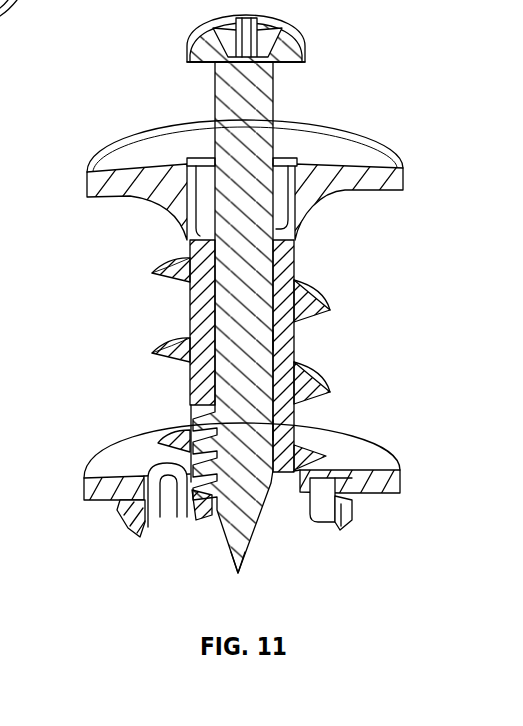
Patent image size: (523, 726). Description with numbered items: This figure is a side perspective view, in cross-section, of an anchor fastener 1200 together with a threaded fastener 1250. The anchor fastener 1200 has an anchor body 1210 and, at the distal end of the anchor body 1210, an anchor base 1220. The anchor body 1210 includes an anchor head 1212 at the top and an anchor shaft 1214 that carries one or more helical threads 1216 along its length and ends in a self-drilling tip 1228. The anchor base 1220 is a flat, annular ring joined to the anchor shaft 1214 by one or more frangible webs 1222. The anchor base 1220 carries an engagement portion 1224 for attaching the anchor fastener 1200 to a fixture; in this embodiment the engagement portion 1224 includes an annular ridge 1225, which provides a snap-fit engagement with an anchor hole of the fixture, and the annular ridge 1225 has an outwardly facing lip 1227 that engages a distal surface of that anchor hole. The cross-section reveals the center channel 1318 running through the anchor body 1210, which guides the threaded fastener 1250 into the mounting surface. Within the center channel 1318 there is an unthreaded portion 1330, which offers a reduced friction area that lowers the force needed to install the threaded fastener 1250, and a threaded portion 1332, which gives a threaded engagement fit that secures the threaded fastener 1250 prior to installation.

The anchor fastener 1200 is at (223, 311).
The anchor body 1210 is at (223, 334).
The anchor head 1212 is at (87, 182).
The anchor shaft 1214 is at (192, 305).
The helical threads 1216 is at (153, 353).
The anchor base 1220 is at (84, 490).
The frangible webs 1222 is at (177, 452).
The engagement portion 1224 is at (120, 523).
The annular ridge 1225 is at (318, 508).
The outwardly facing lip 1227 is at (353, 503).
The self-drilling tip 1228 is at (200, 515).
The threaded fastener 1250 is at (264, 319).
The unthreaded portion 1330 is at (281, 338).
The threaded portion 1332 is at (281, 428).
The center channel 1318 is at (240, 584).